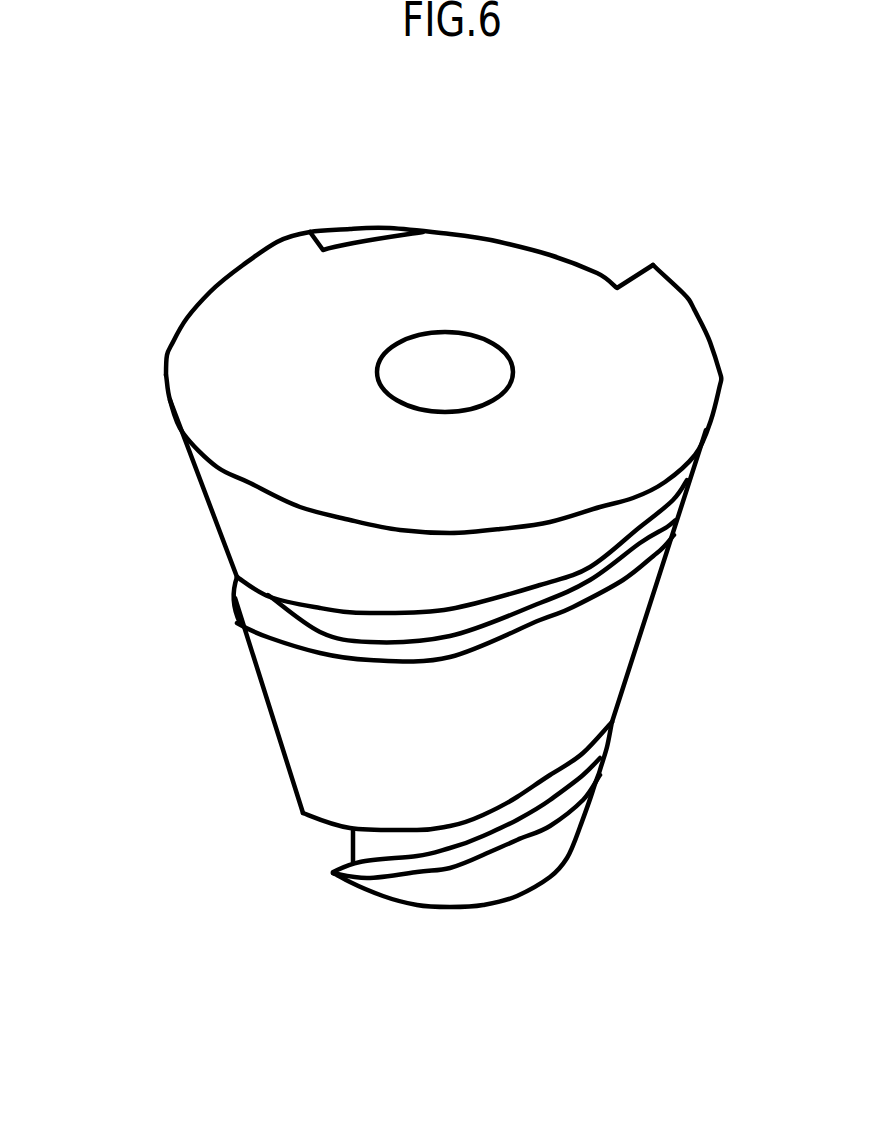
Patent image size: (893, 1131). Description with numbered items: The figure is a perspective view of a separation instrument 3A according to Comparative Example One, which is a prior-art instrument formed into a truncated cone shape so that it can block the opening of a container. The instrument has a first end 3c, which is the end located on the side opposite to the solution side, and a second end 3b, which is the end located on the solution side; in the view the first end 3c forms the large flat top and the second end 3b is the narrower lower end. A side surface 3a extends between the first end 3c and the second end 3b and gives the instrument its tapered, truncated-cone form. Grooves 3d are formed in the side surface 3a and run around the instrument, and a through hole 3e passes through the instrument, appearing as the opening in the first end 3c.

The separation instrument 3A is at (79, 177).
The side surface 3a is at (602, 667).
The second end 3b is at (535, 905).
The first end 3c is at (630, 362).
The grooves 3d is at (663, 522).
The through hole 3e is at (440, 362).